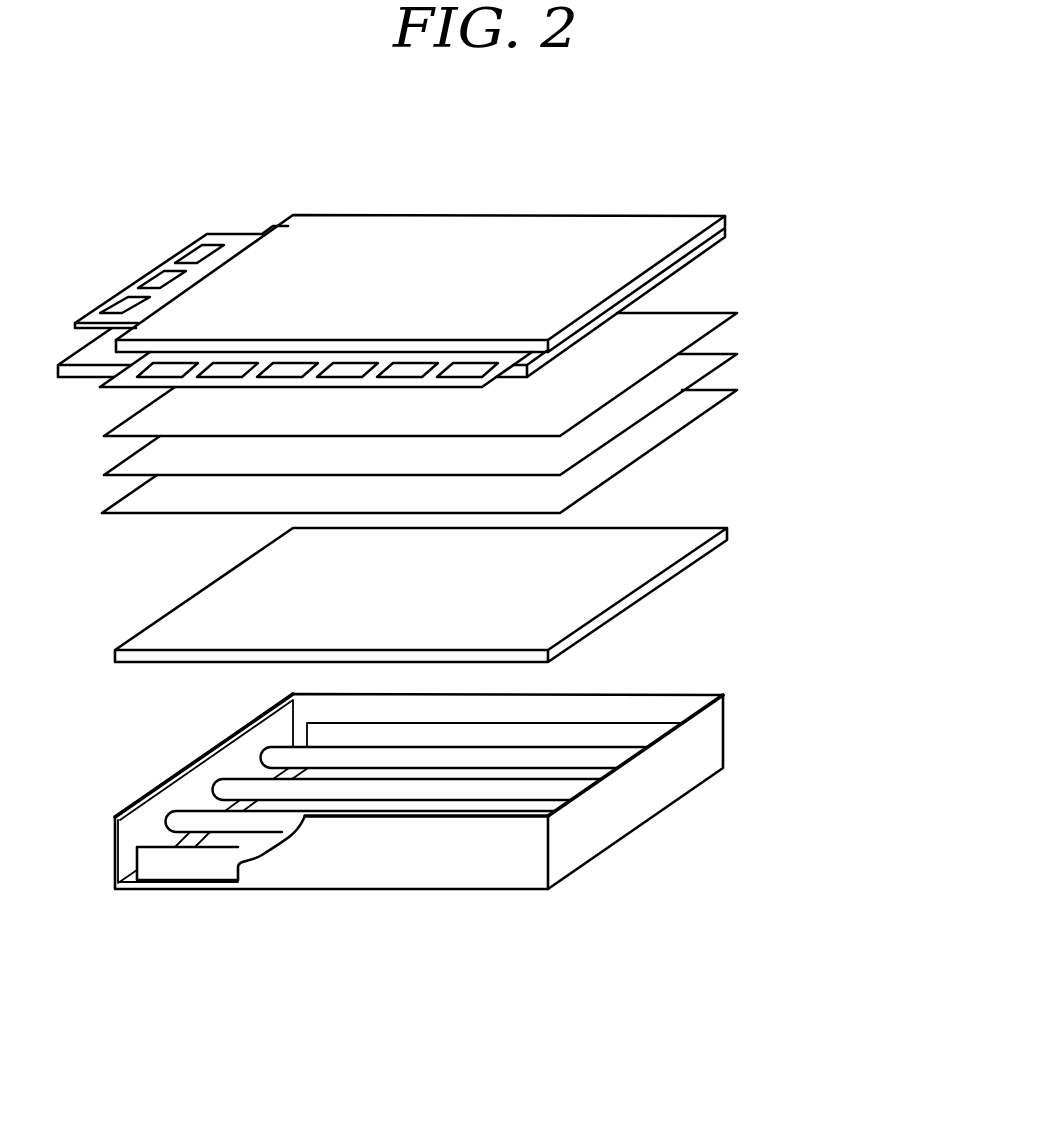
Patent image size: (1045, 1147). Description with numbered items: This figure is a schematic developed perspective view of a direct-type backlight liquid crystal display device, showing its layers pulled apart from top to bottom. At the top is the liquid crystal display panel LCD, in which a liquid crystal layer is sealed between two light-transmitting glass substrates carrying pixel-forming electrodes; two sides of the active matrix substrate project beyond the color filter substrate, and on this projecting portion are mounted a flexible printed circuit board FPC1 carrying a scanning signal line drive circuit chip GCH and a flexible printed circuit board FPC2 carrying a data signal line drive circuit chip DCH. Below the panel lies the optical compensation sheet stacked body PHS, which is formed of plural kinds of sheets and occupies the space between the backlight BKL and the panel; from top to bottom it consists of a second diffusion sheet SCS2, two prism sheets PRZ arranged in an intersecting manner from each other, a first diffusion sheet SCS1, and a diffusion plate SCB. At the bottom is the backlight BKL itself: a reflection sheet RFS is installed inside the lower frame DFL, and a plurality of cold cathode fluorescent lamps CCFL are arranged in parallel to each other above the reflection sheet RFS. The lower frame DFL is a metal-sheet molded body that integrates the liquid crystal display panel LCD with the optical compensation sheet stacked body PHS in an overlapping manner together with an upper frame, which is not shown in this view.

The liquid crystal display panel LCD is at (646, 215).
The flexible printed circuit board FPC1 is at (230, 232).
The scanning signal line drive circuit chip GCH is at (160, 282).
The flexible printed circuit board FPC2 is at (112, 388).
The data signal line drive circuit chip DCH is at (413, 372).
The second diffusion sheet SCS2 is at (714, 318).
The prism sheet PRZ is at (710, 367).
The first diffusion sheet SCS1 is at (457, 451).
The optical compensation sheet stacked body PHS is at (509, 393).
The diffusion plate SCB is at (698, 537).
The backlight BKL is at (475, 822).
The lower frame DFL is at (607, 832).
The cold cathode fluorescent lamp CCFL is at (415, 758).
The reflection sheet RFS is at (177, 870).